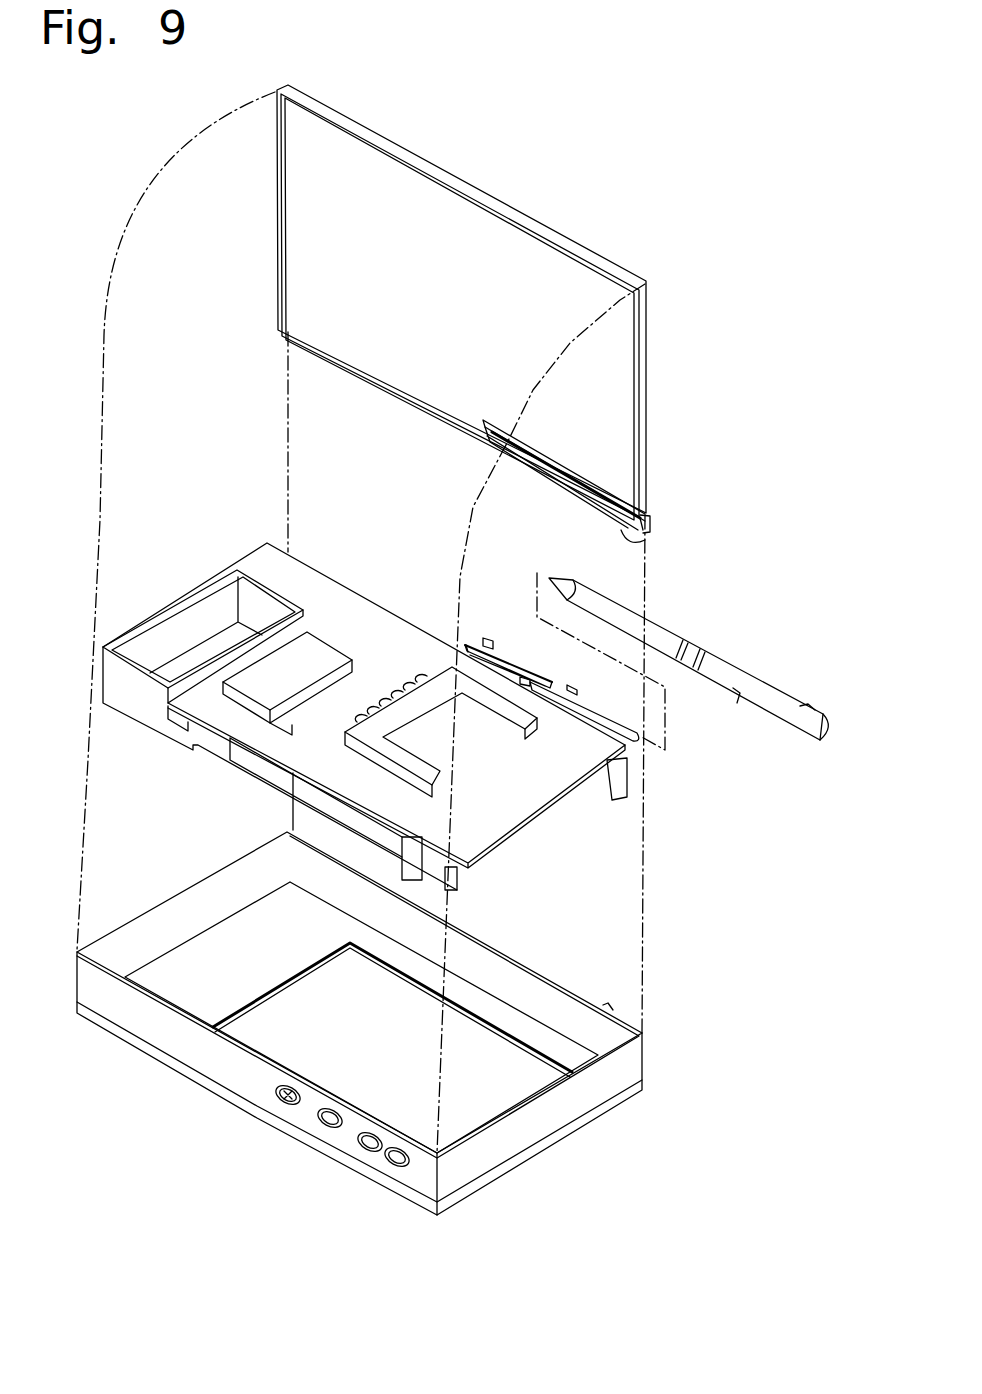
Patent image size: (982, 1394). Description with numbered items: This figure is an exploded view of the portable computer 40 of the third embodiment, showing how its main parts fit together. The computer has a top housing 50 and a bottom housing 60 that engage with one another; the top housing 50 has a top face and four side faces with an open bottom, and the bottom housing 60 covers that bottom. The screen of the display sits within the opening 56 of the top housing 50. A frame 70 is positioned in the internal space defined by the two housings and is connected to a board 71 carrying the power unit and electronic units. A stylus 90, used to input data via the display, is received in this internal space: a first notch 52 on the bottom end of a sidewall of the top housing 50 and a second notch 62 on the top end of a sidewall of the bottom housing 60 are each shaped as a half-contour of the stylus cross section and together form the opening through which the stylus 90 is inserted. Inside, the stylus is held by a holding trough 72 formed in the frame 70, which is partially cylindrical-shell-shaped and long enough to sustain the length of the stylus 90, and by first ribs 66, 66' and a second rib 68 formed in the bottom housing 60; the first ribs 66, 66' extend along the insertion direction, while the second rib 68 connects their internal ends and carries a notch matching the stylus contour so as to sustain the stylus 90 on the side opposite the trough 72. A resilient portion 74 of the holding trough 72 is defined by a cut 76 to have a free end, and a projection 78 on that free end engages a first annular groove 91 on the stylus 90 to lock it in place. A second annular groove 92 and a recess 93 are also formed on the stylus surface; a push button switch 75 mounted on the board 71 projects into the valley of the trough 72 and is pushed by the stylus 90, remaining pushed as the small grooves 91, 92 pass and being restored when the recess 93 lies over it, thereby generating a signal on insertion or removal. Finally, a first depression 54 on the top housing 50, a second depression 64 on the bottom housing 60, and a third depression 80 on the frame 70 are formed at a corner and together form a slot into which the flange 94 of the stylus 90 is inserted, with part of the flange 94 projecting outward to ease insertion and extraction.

The portable computer 40 is at (125, 161).
The top housing 50 is at (638, 1067).
The first notch 52 is at (630, 1043).
The first depression 54 is at (630, 1017).
The opening 56 is at (457, 1023).
The bottom housing 60 is at (649, 390).
The second notch 62 is at (651, 519).
The second depression 64 is at (637, 538).
The first rib 66 is at (566, 457).
The first rib 66' is at (564, 473).
The second rib 68 is at (487, 418).
The frame 70 is at (552, 800).
The board 71 is at (493, 805).
The holding trough 72 is at (585, 698).
The resilient portion 74 is at (503, 647).
The push button switch 75 is at (550, 685).
The cut 76 is at (489, 645).
The projection 78 is at (496, 645).
The third depression 80 is at (637, 723).
The stylus 90 is at (648, 632).
The first annular groove 91 is at (685, 648).
The second annular groove 92 is at (703, 657).
The recess 93 is at (735, 700).
The flange 94 is at (807, 707).